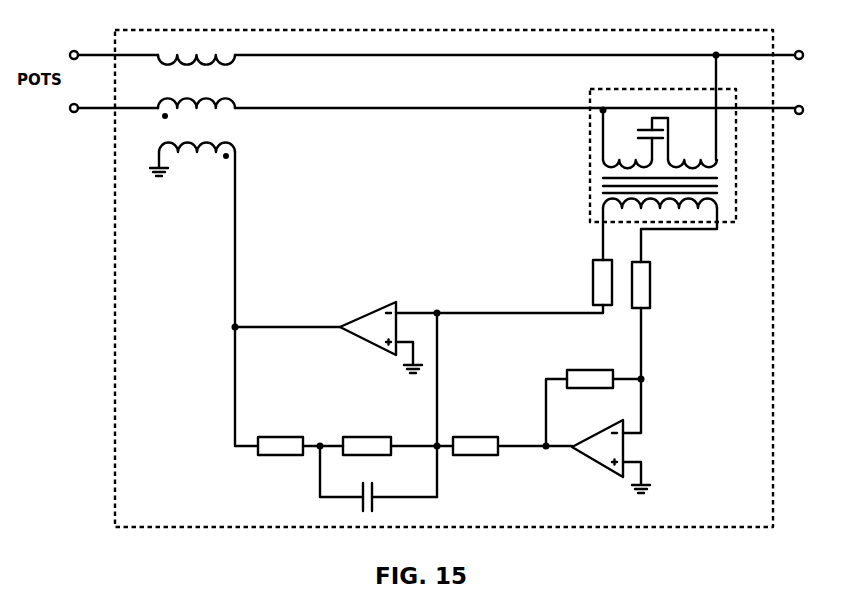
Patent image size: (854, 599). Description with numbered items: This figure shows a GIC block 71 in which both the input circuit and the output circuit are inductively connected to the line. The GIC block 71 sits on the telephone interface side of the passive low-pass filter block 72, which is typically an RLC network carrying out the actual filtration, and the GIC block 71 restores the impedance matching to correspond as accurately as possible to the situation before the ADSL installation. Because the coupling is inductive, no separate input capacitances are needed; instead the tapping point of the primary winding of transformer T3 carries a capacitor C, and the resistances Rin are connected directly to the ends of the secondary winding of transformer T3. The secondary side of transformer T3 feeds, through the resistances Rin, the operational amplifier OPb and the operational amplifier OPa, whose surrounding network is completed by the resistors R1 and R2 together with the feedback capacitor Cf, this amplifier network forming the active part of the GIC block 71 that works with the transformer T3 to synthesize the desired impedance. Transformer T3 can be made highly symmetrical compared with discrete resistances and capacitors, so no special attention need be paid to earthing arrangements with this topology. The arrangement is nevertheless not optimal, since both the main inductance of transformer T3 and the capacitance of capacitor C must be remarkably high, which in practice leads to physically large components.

The GIC block 71 is at (247, 30).
The passive low-pass filter block 72 is at (808, 82).
The transformer T3 is at (663, 158).
The capacitor C is at (642, 136).
The resistances Rin is at (565, 357).
The operational amplifier b OPb is at (367, 311).
The operational amplifier a OPa is at (596, 432).
The resistor R1 is at (280, 436).
The resistor R2 is at (367, 436).
The feedback capacitor Cf is at (378, 478).